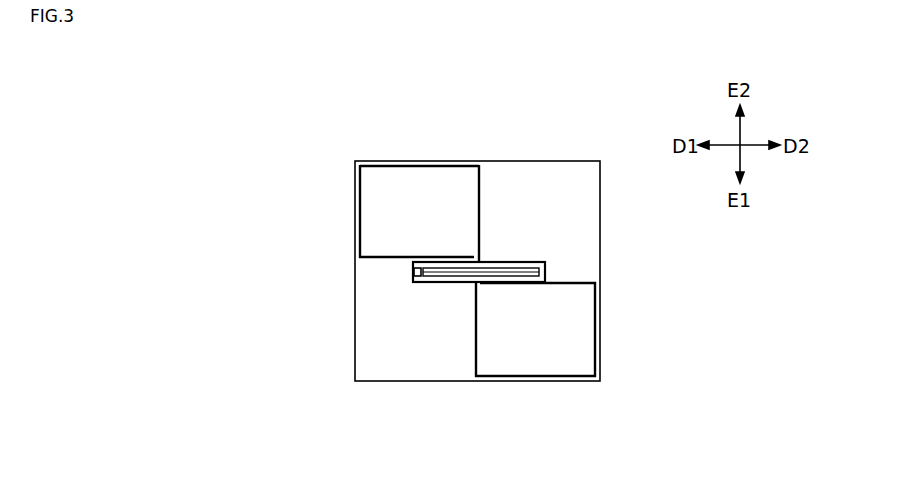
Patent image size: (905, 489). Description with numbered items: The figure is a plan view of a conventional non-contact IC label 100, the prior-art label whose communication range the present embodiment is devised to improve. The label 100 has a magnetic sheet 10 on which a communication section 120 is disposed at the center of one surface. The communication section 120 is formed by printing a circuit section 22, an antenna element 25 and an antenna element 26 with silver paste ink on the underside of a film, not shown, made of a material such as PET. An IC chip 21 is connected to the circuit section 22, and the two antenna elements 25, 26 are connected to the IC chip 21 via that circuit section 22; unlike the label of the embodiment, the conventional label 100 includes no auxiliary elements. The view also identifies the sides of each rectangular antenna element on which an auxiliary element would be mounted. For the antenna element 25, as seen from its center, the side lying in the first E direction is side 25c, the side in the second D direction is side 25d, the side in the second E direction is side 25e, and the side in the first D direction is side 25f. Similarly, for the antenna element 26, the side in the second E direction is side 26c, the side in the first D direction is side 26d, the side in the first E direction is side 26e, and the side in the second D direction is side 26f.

The conventional non-contact IC label 100 is at (319, 150).
The magnetic sheet 10 is at (366, 382).
The communication section 120 is at (437, 163).
The antenna element (first antenna section) 25 is at (415, 185).
The side 25e is at (387, 163).
The side 25d is at (482, 200).
The side 25f is at (360, 205).
The side 25c is at (374, 259).
The circuit section 22 is at (533, 262).
The IC chip 21 is at (414, 273).
The antenna element (second antenna section) 26 is at (517, 363).
The side 26c is at (577, 283).
The side 26f is at (596, 344).
The side 26e is at (567, 377).
The side 26d is at (475, 334).